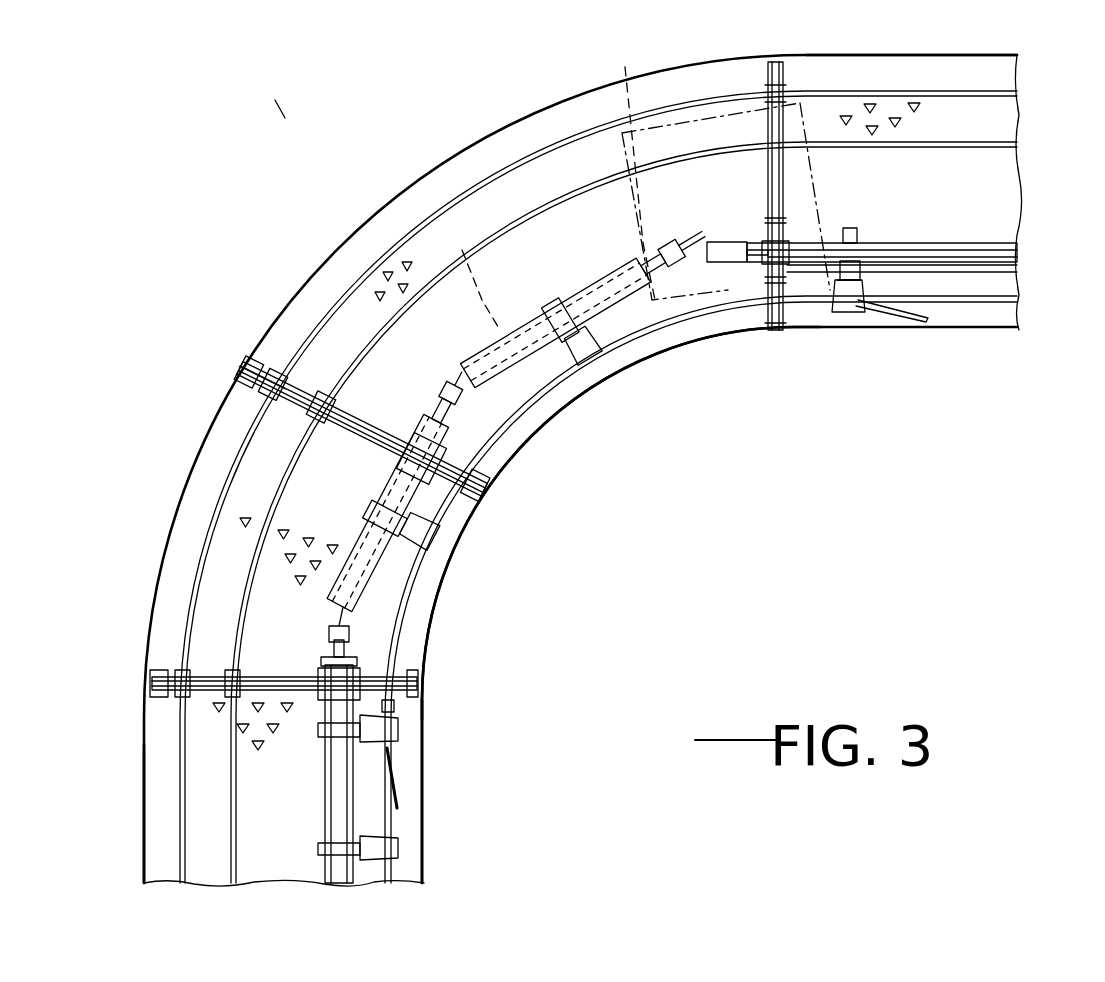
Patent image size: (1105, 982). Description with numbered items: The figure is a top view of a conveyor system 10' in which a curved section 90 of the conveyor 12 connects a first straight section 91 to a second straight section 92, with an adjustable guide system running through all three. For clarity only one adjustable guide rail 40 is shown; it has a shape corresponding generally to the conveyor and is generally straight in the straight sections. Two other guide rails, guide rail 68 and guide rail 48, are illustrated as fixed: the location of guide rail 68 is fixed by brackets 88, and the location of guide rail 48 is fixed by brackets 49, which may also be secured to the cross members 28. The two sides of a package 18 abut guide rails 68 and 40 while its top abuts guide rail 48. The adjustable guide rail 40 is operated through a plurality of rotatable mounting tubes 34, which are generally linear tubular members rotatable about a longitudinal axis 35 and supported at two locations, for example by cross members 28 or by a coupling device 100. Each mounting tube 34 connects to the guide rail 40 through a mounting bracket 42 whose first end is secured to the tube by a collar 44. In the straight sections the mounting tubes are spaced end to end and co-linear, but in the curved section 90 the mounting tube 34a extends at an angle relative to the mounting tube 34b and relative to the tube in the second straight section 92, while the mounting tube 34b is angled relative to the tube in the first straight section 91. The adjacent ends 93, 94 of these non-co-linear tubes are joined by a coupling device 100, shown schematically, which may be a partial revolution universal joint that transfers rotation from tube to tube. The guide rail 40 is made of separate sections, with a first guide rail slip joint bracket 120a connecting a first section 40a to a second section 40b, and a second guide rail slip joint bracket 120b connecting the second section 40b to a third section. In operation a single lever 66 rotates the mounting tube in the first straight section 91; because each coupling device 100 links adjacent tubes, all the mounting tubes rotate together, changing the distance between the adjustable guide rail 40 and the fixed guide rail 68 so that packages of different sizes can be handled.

The conveyor system 10' is at (248, 89).
The conveyor 12 is at (425, 860).
The package 18 is at (622, 70).
The cross member 28 is at (420, 680).
The mounting tube 34 is at (325, 775).
The mounting tube 34a is at (393, 491).
The mounting tube 34b is at (520, 325).
The longitudinal axis 35 is at (473, 267).
The adjustable guide rail 40 is at (527, 418).
The first section of the guide rail 40a is at (975, 333).
The second section of the guide rail 40b is at (735, 312).
The mounting bracket 42 is at (400, 722).
The collar 44 is at (320, 728).
The guide rail 48 is at (300, 452).
The bracket 49 is at (240, 680).
The lever 66 is at (790, 235).
The guide rail 68 is at (220, 488).
The bracket 88 is at (160, 680).
The curved section 90 is at (350, 252).
The first straight section 91 is at (906, 60).
The second straight section 92 is at (150, 806).
The adjacent end 93 is at (431, 369).
The adjacent end 94 is at (452, 380).
The coupling device 100 is at (345, 640).
The first guide rail slip joint bracket 120a is at (402, 738).
The second guide rail slip joint bracket 120b is at (850, 318).